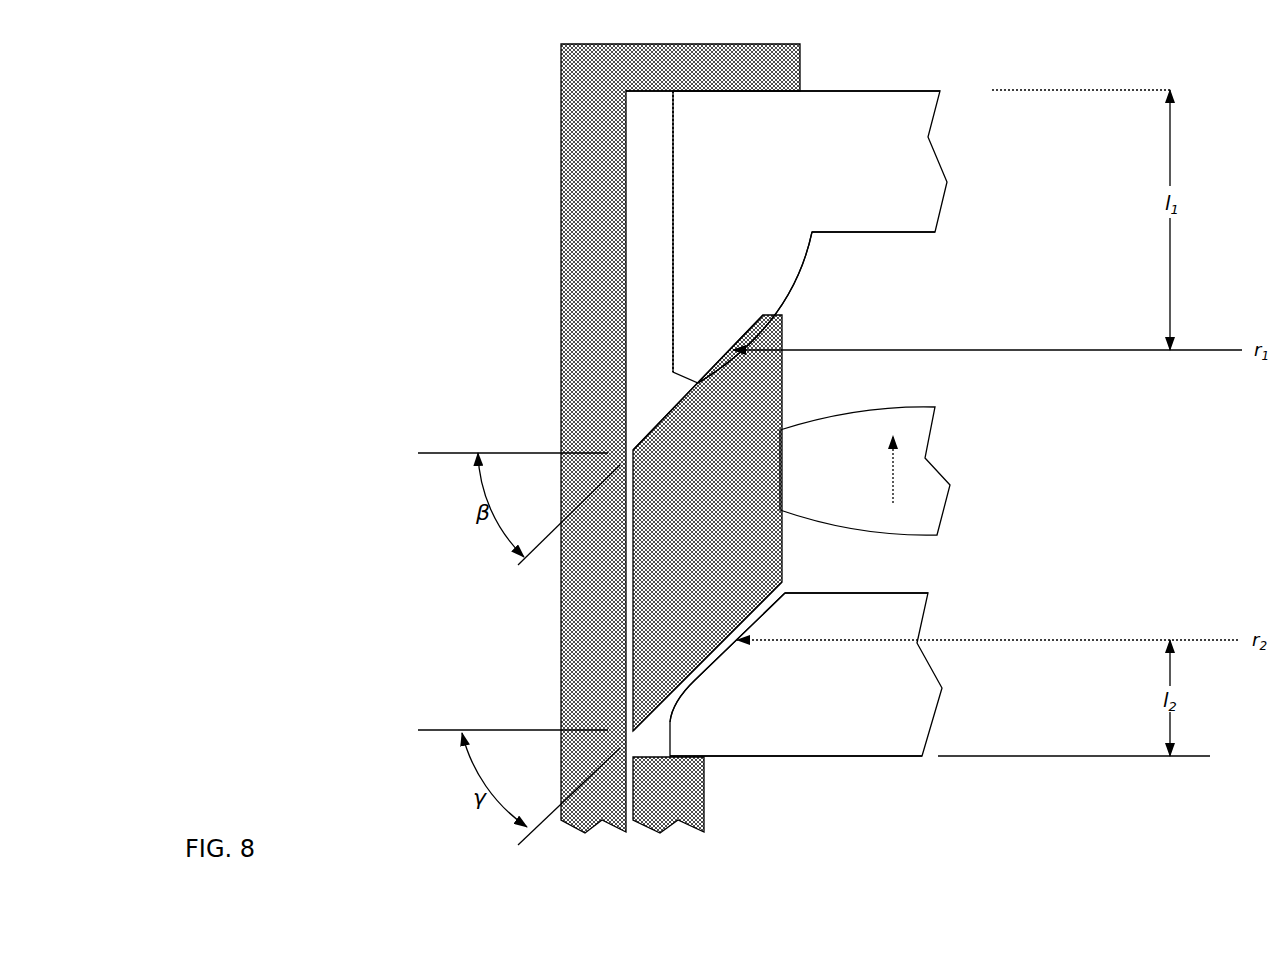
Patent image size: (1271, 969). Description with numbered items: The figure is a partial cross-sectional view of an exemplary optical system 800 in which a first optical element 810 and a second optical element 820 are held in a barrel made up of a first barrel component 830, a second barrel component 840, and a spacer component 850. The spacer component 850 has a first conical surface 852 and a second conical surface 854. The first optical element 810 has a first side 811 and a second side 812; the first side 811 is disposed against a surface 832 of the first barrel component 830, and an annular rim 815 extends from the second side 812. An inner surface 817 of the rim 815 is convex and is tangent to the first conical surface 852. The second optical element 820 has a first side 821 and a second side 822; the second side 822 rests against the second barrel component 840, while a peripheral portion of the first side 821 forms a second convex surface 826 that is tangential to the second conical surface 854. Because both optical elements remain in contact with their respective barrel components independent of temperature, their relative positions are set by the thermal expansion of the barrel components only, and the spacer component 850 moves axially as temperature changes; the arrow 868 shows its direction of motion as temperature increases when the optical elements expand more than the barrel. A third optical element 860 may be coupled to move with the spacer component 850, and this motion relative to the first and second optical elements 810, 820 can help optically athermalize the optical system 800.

The optical system 800 is at (312, 62).
The first optical element 810 is at (888, 90).
The first side 811 is at (853, 92).
The second side 812 is at (897, 233).
The annular rim 815 is at (710, 308).
The inner surface 817 is at (787, 280).
The second optical element 820 is at (923, 620).
The first side 821 is at (907, 592).
The second side 822 is at (822, 758).
The second convex surface 826 is at (699, 679).
The first barrel component 830 is at (561, 127).
The surface 832 is at (655, 93).
The second barrel component 840 is at (704, 832).
The spacer component 850 is at (783, 382).
The first conical surface 852 is at (675, 403).
The second conical surface 854 is at (682, 680).
The third optical element 860 is at (937, 430).
The arrow 868 is at (893, 485).